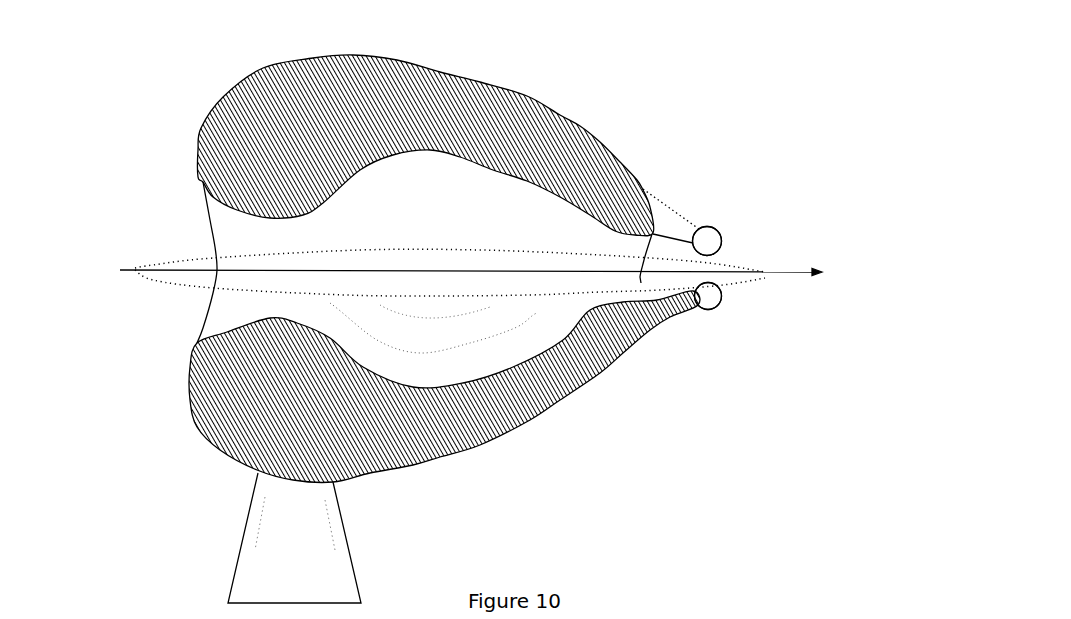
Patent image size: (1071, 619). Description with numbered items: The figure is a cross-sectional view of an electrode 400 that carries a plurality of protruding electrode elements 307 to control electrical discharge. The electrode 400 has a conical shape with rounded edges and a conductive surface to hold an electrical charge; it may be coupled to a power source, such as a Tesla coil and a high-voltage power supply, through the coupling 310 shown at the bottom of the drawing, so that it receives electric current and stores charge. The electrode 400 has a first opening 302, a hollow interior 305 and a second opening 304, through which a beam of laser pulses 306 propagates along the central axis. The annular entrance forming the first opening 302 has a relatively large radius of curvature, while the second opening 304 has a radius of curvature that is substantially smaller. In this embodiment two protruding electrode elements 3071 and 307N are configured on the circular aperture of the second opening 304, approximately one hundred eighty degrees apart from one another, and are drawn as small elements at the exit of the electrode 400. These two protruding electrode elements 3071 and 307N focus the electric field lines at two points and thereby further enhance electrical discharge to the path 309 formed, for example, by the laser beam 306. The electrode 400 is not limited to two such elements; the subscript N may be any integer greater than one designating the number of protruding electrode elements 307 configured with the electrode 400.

The first opening 302 is at (212, 230).
The second opening 304 is at (641, 283).
The hollow interior 305 is at (510, 210).
The beam of laser pulses 306 is at (752, 273).
The protruding electrode element 307 is at (707, 268).
The protruding electrode element (N-th) 307N is at (721, 229).
The protruding electrode element (first) 3071 is at (718, 306).
The path 309 is at (535, 295).
The coupling 310 is at (317, 570).
The electrode 400 is at (805, 102).